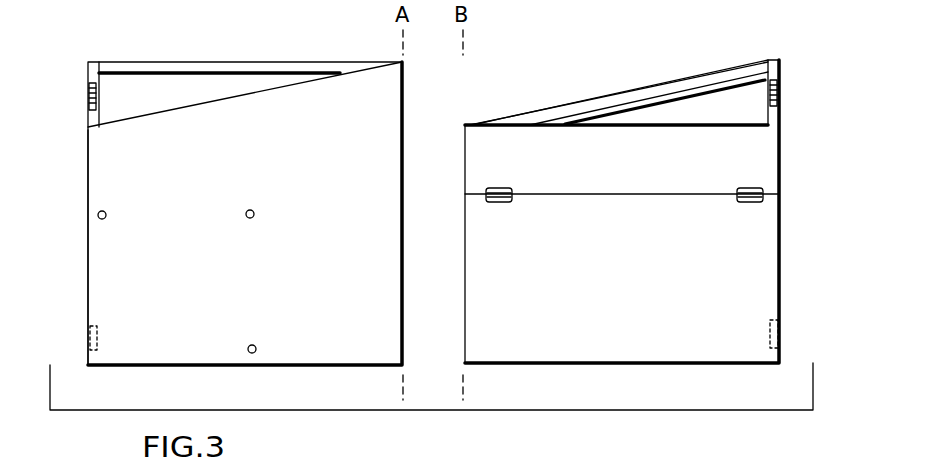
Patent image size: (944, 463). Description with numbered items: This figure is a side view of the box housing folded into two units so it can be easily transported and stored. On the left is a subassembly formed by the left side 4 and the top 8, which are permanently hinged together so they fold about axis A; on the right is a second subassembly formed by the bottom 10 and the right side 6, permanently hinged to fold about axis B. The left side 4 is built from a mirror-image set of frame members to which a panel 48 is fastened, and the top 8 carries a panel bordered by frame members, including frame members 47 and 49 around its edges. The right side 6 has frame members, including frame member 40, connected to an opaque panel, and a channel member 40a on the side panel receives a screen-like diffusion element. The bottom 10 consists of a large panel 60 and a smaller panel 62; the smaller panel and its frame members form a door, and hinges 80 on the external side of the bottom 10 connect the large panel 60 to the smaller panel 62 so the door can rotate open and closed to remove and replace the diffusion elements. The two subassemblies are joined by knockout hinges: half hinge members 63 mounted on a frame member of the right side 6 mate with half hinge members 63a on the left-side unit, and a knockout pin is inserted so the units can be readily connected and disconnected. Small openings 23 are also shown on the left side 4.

The left side 4 is at (87, 248).
The right side 6 is at (569, 104).
The top 8 is at (237, 63).
The bottom 10 is at (781, 272).
The apertures 23 is at (105, 211).
The frame member 40 is at (622, 92).
The channel member 40a is at (667, 99).
The frame member 47 is at (147, 75).
The panel 48 is at (277, 281).
The frame member 49 is at (101, 117).
The large panel 60 is at (647, 307).
The smaller panel 62 is at (651, 173).
The half hinge members 63 is at (781, 96).
The half hinge members 63a is at (86, 97).
The hinges 80 is at (496, 188).